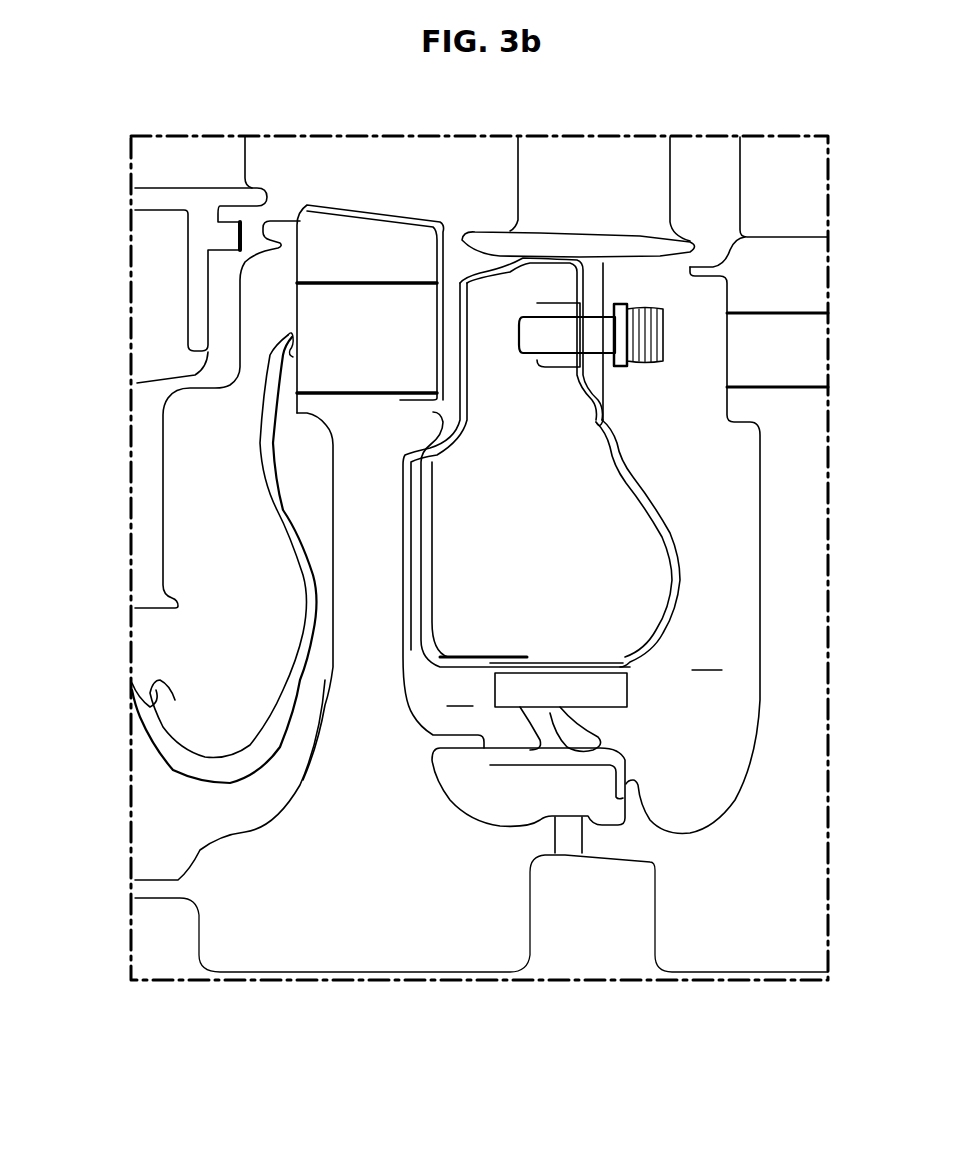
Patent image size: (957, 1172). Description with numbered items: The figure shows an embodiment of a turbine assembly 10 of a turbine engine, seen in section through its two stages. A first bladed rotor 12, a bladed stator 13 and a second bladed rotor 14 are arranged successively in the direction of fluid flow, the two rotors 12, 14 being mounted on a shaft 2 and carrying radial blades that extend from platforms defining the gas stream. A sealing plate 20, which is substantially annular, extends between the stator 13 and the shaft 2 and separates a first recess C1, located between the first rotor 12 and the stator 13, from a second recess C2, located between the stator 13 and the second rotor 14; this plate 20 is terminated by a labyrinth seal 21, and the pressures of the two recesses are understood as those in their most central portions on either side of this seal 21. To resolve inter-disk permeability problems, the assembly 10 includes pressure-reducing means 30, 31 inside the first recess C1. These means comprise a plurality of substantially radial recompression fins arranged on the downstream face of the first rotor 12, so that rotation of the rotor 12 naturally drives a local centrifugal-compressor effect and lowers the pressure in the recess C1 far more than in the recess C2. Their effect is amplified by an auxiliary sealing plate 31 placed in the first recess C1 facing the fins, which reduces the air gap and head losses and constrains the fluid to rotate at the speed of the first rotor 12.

The shaft 2 is at (186, 962).
The turbine assembly 10 is at (72, 215).
The first bladed rotor 12 is at (360, 488).
The bladed stator 13 is at (650, 186).
The second bladed rotor 14 is at (808, 487).
The sealing plate 20 is at (668, 548).
The labyrinth seal 21 is at (520, 760).
The bracket 30 is at (418, 553).
The auxiliary sealing plate 31 is at (478, 657).
The first recess C1 is at (537, 712).
The second recess C2 is at (707, 658).